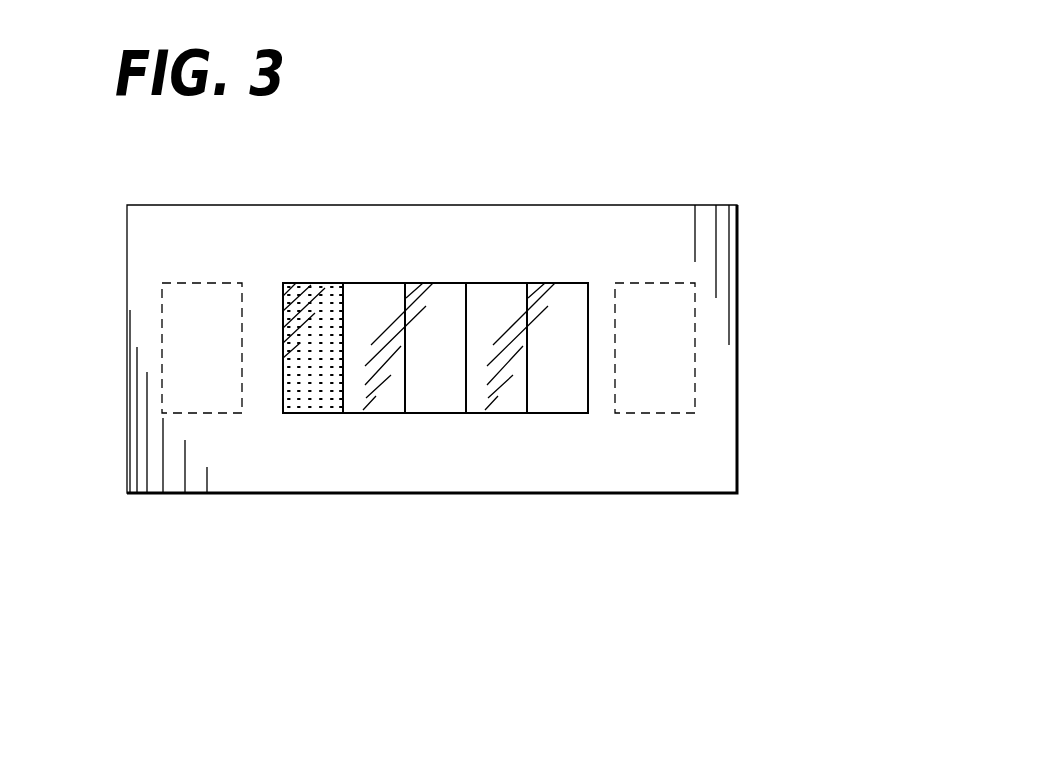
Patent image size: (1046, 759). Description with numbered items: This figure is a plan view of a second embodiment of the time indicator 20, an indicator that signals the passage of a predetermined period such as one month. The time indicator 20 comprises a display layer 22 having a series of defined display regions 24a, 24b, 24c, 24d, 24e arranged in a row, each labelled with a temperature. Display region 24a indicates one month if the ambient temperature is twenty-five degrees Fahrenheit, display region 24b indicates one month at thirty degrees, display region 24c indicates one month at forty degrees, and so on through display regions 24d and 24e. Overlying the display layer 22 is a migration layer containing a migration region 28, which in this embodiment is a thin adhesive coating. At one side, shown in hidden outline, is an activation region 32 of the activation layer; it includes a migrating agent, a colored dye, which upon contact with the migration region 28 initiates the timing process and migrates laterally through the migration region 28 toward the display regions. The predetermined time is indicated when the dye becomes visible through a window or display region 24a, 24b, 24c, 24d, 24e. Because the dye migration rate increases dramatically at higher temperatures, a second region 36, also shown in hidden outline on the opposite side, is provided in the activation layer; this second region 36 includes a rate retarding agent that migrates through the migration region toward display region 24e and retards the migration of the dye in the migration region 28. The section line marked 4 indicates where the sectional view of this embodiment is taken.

The time indicator 20 is at (499, 178).
The display layer 22 is at (185, 263).
The migration region 28 is at (270, 292).
The display region 24a is at (312, 413).
The display region 24b is at (373, 413).
The display region 24c is at (440, 413).
The display region 24d is at (508, 413).
The display region 24e is at (560, 413).
The activation region 32 is at (208, 414).
The second region 36 is at (660, 415).
The section line 4- 4 is at (119, 348).